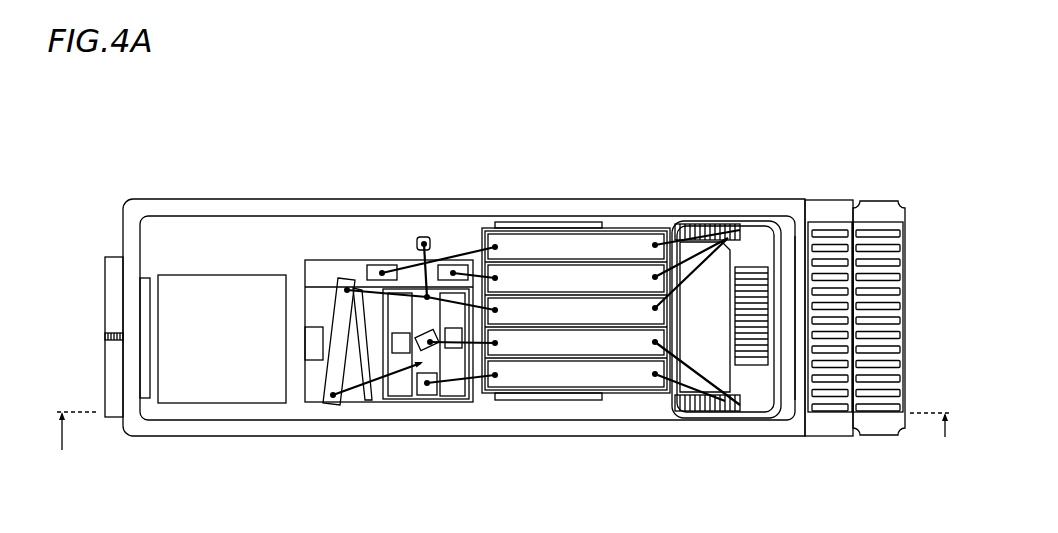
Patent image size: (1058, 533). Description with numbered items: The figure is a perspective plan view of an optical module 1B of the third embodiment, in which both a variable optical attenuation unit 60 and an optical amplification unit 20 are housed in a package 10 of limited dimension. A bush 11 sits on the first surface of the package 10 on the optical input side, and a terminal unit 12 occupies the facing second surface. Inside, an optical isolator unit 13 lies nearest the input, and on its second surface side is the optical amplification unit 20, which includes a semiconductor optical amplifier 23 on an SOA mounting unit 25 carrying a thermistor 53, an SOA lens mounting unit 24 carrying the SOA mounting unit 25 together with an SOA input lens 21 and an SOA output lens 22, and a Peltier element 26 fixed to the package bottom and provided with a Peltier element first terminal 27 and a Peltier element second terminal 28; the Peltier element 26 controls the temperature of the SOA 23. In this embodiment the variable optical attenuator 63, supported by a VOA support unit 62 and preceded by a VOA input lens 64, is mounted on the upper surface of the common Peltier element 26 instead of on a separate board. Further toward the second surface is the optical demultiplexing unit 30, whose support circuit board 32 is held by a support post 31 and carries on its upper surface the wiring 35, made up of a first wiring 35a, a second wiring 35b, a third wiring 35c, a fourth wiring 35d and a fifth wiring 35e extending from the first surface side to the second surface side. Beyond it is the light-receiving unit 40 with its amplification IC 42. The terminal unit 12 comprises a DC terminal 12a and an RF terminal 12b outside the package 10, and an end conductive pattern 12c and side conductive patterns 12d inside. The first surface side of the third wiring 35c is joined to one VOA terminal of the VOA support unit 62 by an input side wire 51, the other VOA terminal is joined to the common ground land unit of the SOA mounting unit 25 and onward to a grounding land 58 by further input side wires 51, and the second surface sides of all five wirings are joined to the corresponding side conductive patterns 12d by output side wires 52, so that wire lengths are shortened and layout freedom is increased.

The optical module 1B is at (246, 156).
The package 10 is at (166, 437).
The bush 11 is at (105, 292).
The terminal unit 12 is at (837, 203).
The DC terminal 12a is at (823, 424).
The RF terminal 12b is at (873, 424).
The end conductive pattern 12c is at (763, 415).
The side conductive pattern 12d is at (722, 262).
The optical isolator unit 13 is at (216, 378).
The optical amplification unit 20 is at (425, 236).
The SOA input lens 21 is at (406, 400).
The SOA output lens 22 is at (440, 396).
The semiconductor optical amplifier 23 is at (443, 352).
The SOA lens mounting unit 24 is at (414, 402).
The SOA mounting unit 25 is at (378, 258).
The Peltier element 26 is at (340, 260).
The Peltier element first terminal 27 is at (385, 264).
The Peltier element second terminal 28 is at (448, 265).
The optical demultiplexing unit 30 is at (636, 223).
The support post 31 is at (525, 401).
The support circuit board 32 is at (462, 350).
The wiring 35 is at (547, 247).
The first wiring 35a is at (638, 373).
The second wiring 35b is at (605, 348).
The third wiring 35c is at (570, 318).
The fourth wiring 35d is at (618, 278).
The fifth wiring 35e is at (577, 242).
The light-receiving unit 40 is at (750, 236).
The amplification IC 42 is at (702, 348).
The input side wire 51 is at (486, 258).
The output side wire 52 is at (690, 226).
The thermistor 53 is at (408, 355).
The grounding land 58 is at (413, 282).
The variable optical attenuation unit 60 is at (317, 248).
The VOA support unit 62 is at (333, 406).
The variable optical attenuator 63 is at (359, 402).
The VOA input lens 64 is at (318, 362).